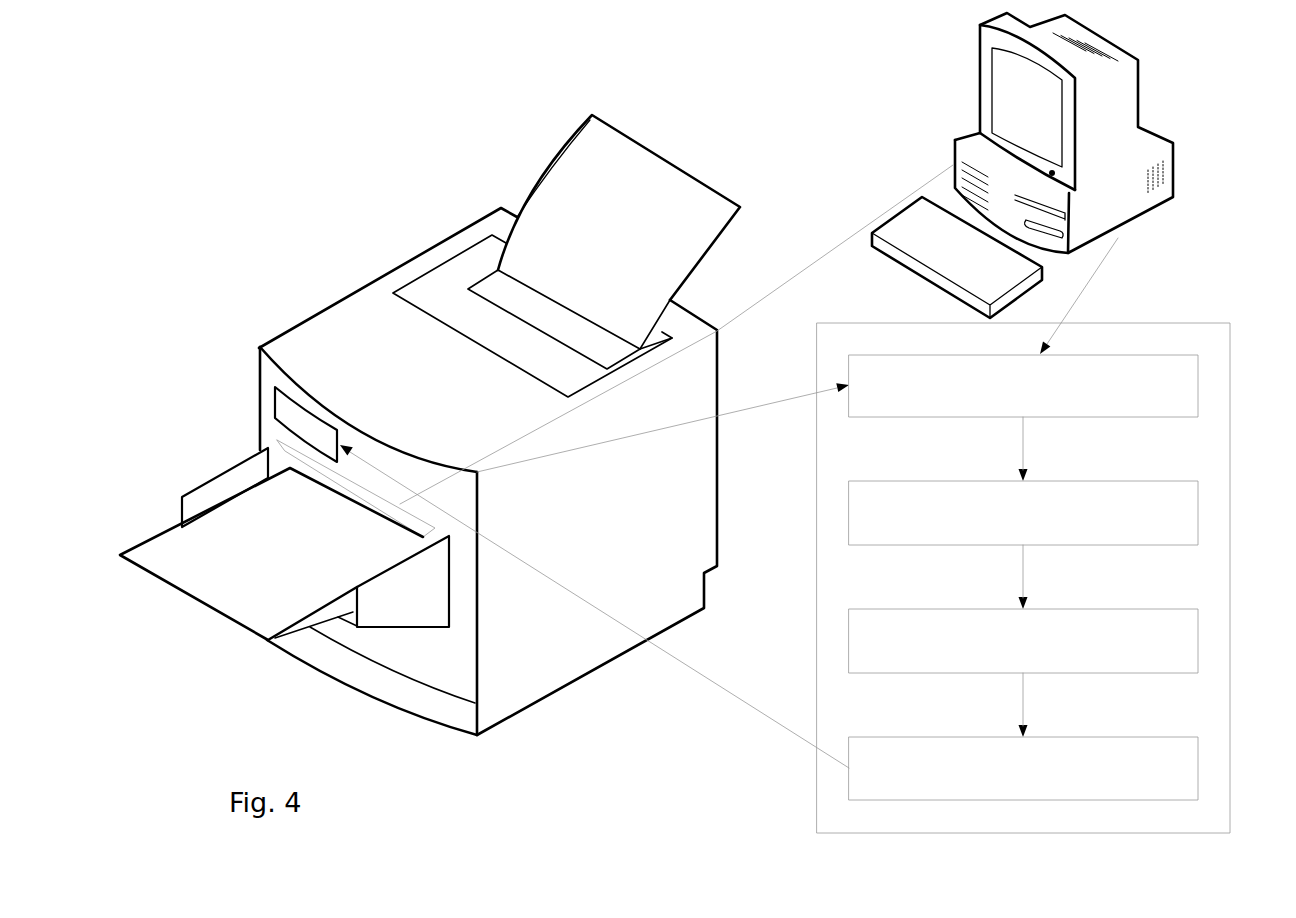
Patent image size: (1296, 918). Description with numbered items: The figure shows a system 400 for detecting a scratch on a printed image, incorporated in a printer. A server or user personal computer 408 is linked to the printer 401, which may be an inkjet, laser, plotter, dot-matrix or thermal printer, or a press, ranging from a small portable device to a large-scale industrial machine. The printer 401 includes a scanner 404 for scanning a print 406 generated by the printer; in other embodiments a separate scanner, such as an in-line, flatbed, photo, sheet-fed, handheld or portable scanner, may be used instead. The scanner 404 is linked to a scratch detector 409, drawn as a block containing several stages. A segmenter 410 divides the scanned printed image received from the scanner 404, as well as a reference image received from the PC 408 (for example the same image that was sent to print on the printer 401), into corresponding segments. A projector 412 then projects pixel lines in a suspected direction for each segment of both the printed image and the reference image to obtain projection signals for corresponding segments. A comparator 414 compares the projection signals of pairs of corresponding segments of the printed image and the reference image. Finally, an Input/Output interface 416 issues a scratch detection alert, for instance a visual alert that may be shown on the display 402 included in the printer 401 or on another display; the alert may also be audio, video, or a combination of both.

The system 400 is at (776, 79).
The printer 401 is at (433, 242).
The display 402 is at (272, 398).
The scanner 404 is at (277, 440).
The print 406 is at (168, 528).
The personal computer 408 is at (980, 92).
The scratch detector 409 is at (1044, 541).
The segmenter 410 is at (1023, 386).
The projector 412 is at (1023, 513).
The comparator 414 is at (1023, 641).
The Input/Output (I/O) interface 416 is at (1023, 768).